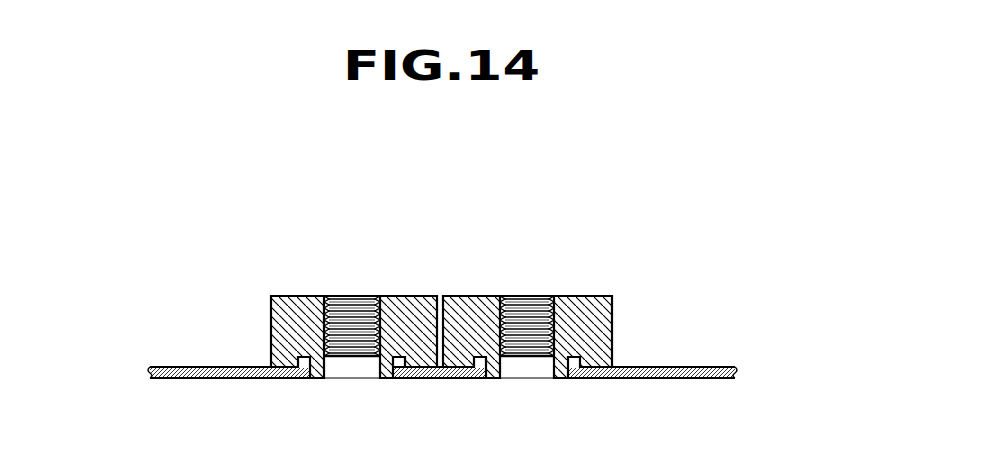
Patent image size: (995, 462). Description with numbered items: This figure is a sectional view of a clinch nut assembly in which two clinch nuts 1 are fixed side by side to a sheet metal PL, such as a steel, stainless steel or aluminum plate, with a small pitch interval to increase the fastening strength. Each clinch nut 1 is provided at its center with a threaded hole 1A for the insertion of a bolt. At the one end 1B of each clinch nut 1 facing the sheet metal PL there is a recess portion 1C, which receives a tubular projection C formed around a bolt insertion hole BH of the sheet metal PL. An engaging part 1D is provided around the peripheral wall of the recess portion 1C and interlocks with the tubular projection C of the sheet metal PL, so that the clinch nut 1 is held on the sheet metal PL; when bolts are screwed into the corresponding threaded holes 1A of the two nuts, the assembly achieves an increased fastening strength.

The clinch nut 1 is at (443, 341).
The threaded hole 1A is at (357, 316).
The one end 1B is at (290, 377).
The recess portion 1C is at (352, 358).
The engaging part 1D is at (392, 356).
The sheet metal PL is at (192, 367).
The bolt insertion hole BH is at (328, 378).
The tubular projection C is at (378, 377).